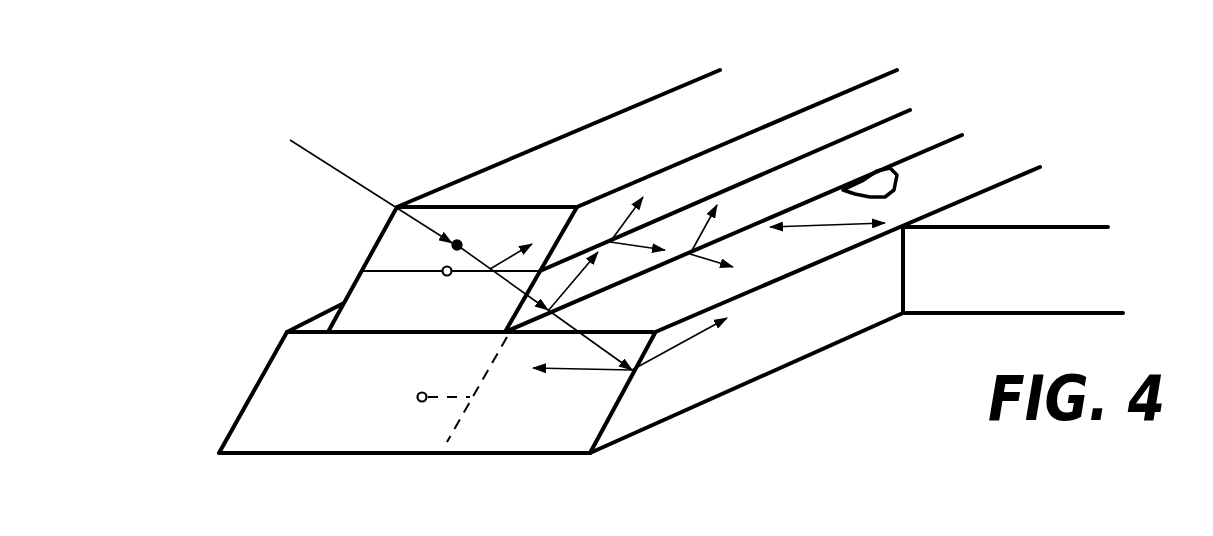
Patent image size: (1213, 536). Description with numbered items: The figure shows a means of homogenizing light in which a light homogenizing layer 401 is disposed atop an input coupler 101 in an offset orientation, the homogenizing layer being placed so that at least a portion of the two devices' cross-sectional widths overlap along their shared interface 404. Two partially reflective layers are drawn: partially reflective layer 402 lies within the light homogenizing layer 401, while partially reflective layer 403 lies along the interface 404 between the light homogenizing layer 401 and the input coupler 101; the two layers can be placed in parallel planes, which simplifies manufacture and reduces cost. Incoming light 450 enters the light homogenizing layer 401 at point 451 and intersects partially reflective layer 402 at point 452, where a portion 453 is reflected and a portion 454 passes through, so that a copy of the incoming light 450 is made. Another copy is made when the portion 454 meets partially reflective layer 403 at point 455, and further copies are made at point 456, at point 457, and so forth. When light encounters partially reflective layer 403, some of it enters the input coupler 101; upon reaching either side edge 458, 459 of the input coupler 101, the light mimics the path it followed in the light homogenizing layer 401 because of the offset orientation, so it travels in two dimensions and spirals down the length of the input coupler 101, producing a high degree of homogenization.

The input coupler 101 is at (747, 384).
The light homogenizing layer 401 is at (582, 126).
The partially reflective layer 402 is at (767, 170).
The partially reflective layer 403 is at (880, 183).
The interface 404 is at (929, 158).
The incoming light 450 is at (372, 190).
The point 451 is at (459, 241).
The point 452 is at (489, 273).
The portion 453 is at (509, 254).
The portion 454 is at (505, 284).
The point 455 is at (620, 375).
The point 456 is at (690, 255).
The point 457 is at (610, 241).
The side edge 458 is at (241, 407).
The side edge 459 is at (627, 393).